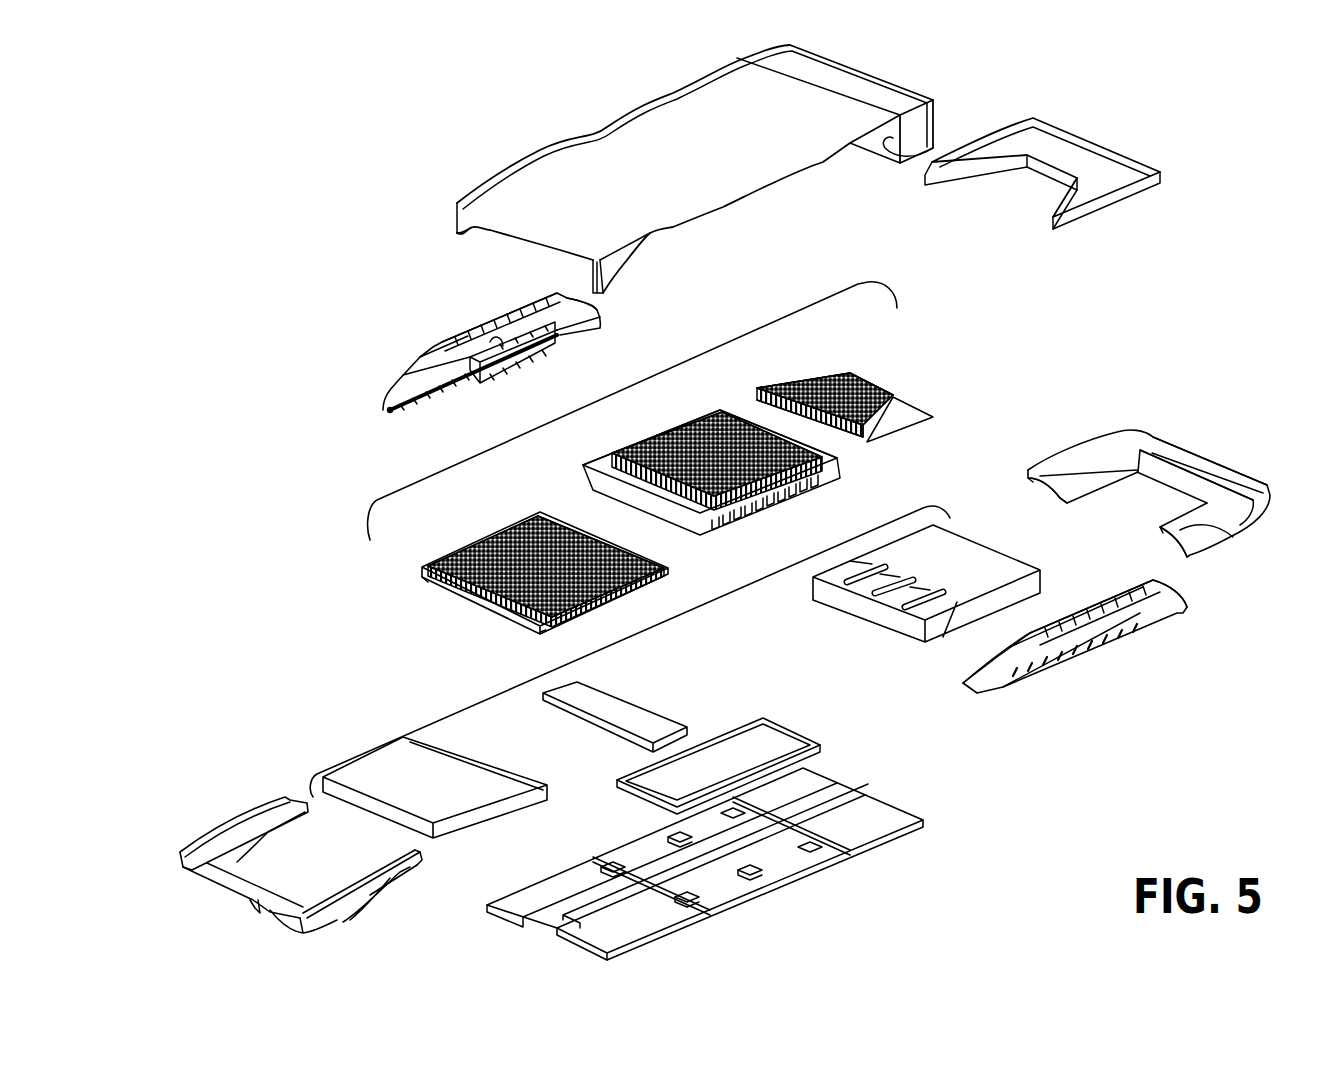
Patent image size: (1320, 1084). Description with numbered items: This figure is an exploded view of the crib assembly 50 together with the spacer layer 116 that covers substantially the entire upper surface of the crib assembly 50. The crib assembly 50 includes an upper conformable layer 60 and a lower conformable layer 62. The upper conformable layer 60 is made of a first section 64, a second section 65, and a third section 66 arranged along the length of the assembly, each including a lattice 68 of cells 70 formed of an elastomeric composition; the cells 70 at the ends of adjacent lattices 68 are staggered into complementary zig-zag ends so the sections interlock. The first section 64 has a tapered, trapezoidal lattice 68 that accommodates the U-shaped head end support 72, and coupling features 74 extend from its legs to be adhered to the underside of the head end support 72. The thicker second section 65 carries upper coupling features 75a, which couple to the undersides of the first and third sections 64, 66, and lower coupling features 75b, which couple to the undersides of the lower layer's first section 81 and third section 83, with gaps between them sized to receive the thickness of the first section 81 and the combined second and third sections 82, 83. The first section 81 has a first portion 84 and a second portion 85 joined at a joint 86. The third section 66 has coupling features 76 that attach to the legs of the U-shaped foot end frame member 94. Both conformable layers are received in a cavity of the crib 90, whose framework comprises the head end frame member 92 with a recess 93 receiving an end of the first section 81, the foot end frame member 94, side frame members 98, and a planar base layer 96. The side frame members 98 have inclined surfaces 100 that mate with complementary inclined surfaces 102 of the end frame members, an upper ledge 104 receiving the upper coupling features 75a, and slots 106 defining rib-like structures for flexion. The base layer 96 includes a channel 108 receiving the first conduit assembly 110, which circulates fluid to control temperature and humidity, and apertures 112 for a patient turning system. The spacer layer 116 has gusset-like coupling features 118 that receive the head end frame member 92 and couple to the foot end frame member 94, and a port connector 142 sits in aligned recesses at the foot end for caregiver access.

The crib assembly 50 is at (1097, 108).
The upper conformable layer 60 is at (633, 375).
The lower conformable layer 62 is at (552, 668).
The first section 64 is at (795, 374).
The second section 65 is at (592, 456).
The third section 66 is at (421, 558).
The lattice 68 is at (682, 412).
The cells 70 is at (677, 424).
The head end support 72 is at (1147, 150).
The coupling features 74 is at (790, 370).
The upper coupling features 75a is at (723, 410).
The lower coupling features 75b is at (670, 512).
The coupling features 76 is at (443, 548).
The first section 81 is at (979, 532).
The second section 82 is at (662, 722).
The third section 83 is at (362, 742).
The first portion 84 is at (860, 557).
The second portion 85 is at (920, 615).
The joint 86 is at (900, 587).
The crib 90 is at (1227, 397).
The head end frame member 92 is at (1240, 463).
The recess 93 is at (1157, 470).
The foot end frame member 94 is at (300, 940).
The base layer 96 is at (707, 923).
The side frame members 98 is at (413, 353).
The inclined surfaces 100 is at (597, 307).
The inclined surfaces 102 is at (1053, 487).
The upper ledge 104 is at (487, 333).
The slots 106 is at (1073, 613).
The channel 108 is at (853, 852).
The first conduit assembly 110 is at (799, 723).
The apertures 112 is at (815, 850).
The spacer layer 116 is at (883, 67).
The coupling features 118 is at (933, 140).
The port connector 142 is at (253, 908).